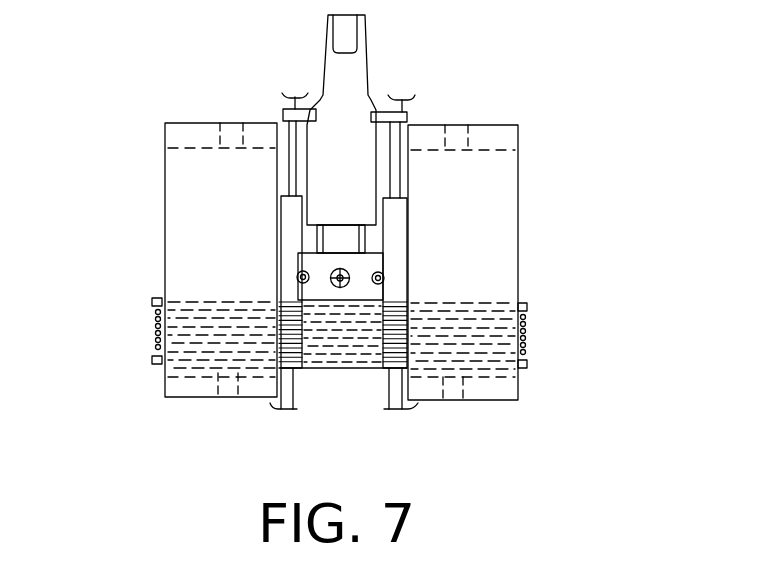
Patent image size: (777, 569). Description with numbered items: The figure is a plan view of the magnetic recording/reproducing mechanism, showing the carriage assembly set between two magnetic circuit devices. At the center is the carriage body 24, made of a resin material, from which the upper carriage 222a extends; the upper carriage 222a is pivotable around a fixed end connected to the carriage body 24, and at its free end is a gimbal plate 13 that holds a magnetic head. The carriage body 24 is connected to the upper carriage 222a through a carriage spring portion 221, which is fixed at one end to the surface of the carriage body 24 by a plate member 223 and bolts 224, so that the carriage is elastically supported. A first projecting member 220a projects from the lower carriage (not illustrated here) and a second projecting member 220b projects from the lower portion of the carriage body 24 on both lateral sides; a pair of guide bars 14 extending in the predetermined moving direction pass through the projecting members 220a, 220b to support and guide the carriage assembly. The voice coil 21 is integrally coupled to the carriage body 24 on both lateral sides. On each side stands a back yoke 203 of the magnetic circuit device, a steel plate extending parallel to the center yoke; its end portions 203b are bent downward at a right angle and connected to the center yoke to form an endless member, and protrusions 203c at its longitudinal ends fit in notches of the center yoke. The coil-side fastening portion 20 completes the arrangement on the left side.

The gimbal plates 13 is at (346, 41).
The guide bars 14 is at (270, 404).
The left fastening clip 20 is at (158, 333).
The voice coil 21 is at (524, 331).
The carriage body 24 is at (318, 362).
The back yoke 203 is at (162, 197).
The end portions 203b is at (488, 125).
The protrusions 203c is at (453, 405).
The first projecting member 220a is at (345, 369).
The second projecting member 220b is at (289, 222).
The carriage spring portions 221 is at (353, 235).
The upper carriage 222a is at (343, 76).
The plate members 223 is at (317, 262).
The bolts 224 is at (332, 278).